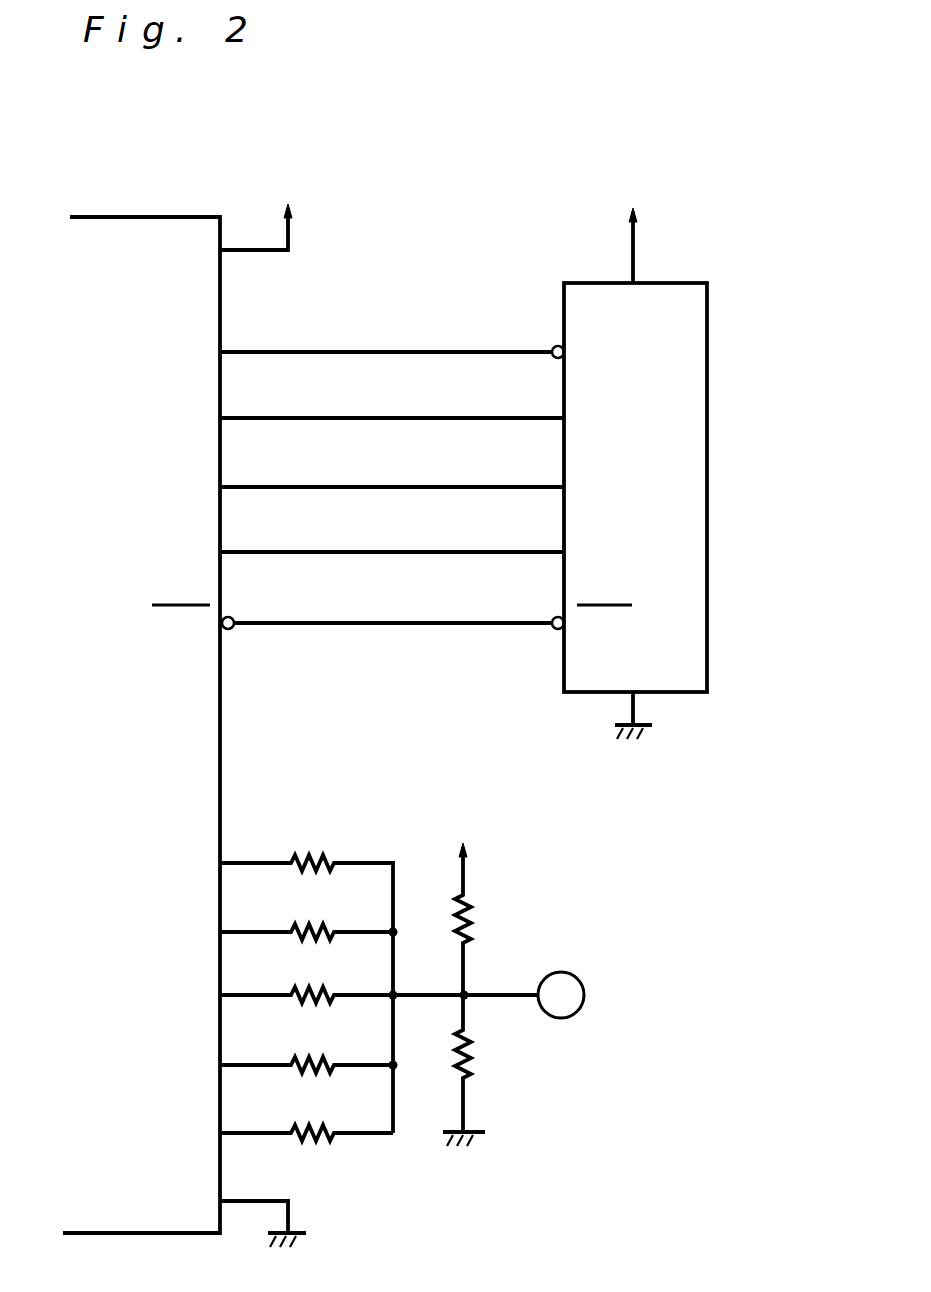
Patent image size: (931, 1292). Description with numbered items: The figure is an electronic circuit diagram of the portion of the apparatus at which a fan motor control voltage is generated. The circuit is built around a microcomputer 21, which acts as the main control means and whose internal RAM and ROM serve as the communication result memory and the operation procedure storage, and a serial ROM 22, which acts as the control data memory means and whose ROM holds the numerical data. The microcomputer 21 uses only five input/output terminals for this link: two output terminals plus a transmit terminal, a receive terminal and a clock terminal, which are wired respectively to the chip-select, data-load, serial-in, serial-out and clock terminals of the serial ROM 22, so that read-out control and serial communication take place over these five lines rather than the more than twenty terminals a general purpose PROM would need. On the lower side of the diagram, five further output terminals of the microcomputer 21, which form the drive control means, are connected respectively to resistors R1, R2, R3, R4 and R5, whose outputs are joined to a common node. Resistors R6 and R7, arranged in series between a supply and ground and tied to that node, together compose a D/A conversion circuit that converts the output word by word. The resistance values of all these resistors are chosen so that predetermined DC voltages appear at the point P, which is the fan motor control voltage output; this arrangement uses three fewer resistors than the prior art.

The microcomputer 21 is at (145, 223).
The serial ROM 22 is at (700, 305).
The resistor R1 is at (306, 875).
The resistor R2 is at (309, 942).
The resistor R3 is at (309, 1009).
The resistor R4 is at (309, 1078).
The resistor R5 is at (306, 1116).
The resistor R6 is at (489, 919).
The resistor R7 is at (483, 1070).
The point P is at (488, 995).